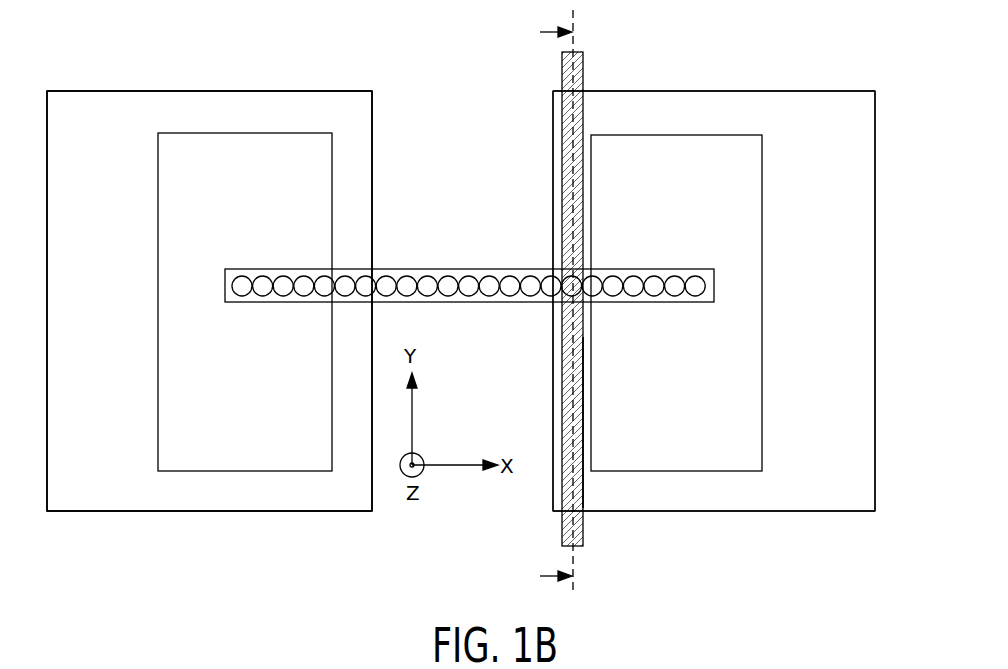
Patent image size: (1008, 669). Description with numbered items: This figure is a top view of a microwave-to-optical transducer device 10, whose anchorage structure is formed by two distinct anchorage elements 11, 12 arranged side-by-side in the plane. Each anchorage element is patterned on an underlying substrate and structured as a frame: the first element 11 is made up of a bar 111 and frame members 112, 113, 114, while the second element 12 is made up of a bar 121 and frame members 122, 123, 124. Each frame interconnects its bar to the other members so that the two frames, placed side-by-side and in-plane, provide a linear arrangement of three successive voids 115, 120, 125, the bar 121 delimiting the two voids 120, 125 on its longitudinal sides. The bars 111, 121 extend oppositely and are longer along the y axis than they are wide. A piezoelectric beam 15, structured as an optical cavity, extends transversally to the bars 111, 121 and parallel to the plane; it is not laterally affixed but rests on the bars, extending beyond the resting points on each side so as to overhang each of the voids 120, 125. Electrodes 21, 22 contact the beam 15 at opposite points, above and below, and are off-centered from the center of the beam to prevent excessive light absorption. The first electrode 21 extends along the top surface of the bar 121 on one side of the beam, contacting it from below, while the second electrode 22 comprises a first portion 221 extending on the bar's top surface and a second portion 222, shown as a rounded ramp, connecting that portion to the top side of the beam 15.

The microwave-to-optical transducer device 10 is at (200, 528).
The anchorage element 11 is at (306, 535).
The bar 111 is at (372, 215).
The frame member 112 is at (244, 103).
The frame member 113 is at (68, 311).
The frame member 114 is at (138, 503).
The void 115 is at (172, 218).
The anchorage element 12 is at (818, 535).
The bar 121 is at (553, 343).
The frame member 122 is at (717, 103).
The frame member 123 is at (858, 402).
The frame member 124 is at (742, 500).
The void 125 is at (750, 201).
The void 120 is at (452, 152).
The piezoelectric beam 15 is at (460, 302).
The first electrode 21 is at (570, 73).
The second electrode 22 is at (645, 337).
The first portion 221 is at (583, 478).
The second portion 222 is at (578, 338).